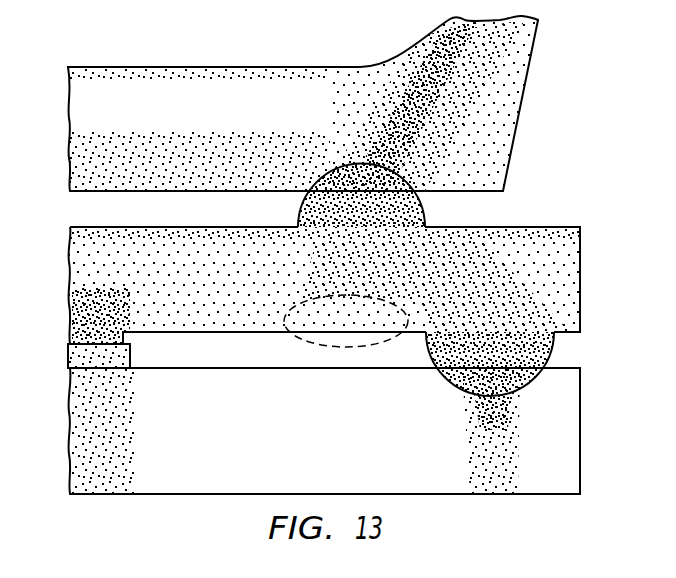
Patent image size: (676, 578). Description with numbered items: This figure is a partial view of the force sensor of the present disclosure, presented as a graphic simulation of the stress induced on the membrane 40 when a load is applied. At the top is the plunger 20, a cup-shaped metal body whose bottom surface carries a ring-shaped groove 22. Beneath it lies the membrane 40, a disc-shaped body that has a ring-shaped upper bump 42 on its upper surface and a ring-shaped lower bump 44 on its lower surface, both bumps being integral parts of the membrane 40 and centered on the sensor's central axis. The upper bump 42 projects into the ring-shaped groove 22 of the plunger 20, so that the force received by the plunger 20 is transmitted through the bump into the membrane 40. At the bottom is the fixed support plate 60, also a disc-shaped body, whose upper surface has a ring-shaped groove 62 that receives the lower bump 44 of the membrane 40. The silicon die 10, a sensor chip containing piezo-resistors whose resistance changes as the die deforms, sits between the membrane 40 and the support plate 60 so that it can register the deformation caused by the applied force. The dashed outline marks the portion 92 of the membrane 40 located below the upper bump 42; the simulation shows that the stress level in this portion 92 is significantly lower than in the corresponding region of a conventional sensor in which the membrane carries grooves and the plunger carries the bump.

The plunger 20 is at (70, 104).
The ring-shaped groove 22 is at (400, 172).
The membrane 40 is at (70, 278).
The upper bump 42 is at (307, 197).
The lower bump 44 is at (518, 353).
The silicon die 10 is at (70, 355).
The support plate 60 is at (70, 426).
The ring-shaped groove 62 is at (527, 389).
The portion below the upper bump 92 is at (312, 344).